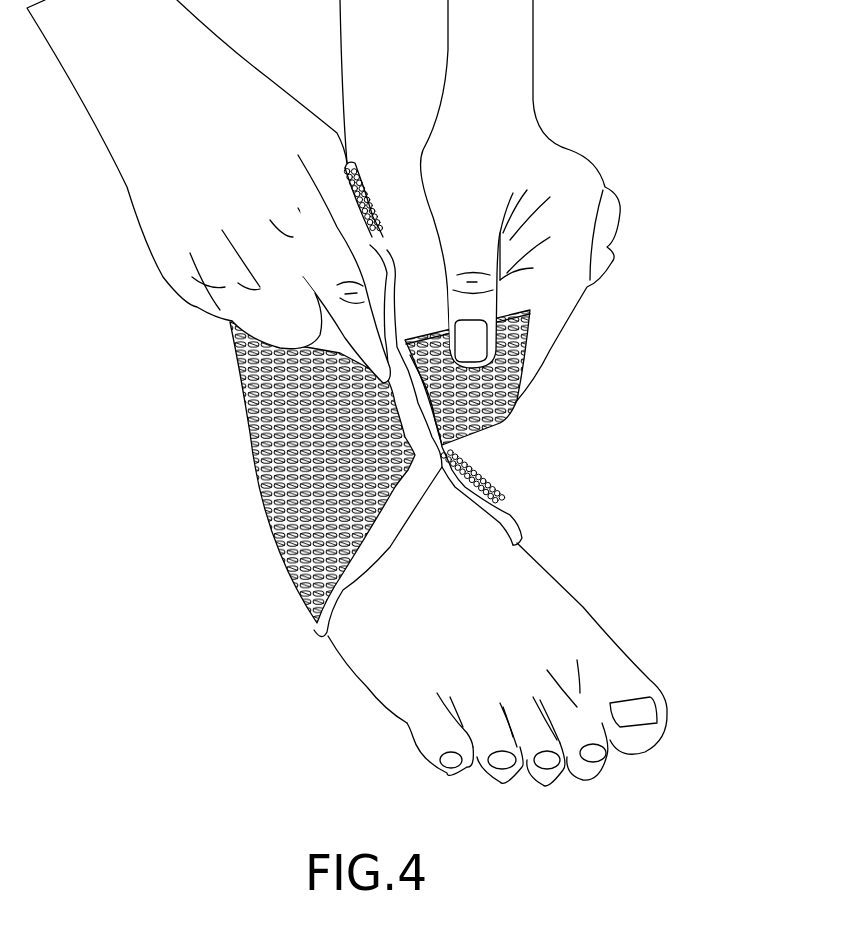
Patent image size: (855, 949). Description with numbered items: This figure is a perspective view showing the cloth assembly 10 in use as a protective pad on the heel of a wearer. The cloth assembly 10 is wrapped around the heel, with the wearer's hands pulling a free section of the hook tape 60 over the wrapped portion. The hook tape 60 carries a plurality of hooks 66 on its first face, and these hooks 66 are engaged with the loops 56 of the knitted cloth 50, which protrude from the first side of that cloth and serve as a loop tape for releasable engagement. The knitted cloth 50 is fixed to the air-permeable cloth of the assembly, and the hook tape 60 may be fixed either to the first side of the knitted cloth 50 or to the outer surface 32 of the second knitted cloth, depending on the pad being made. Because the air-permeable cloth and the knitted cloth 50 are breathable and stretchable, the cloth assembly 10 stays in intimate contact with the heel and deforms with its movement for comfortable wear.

The cloth assembly 10 is at (365, 399).
The outer surface 32 is at (481, 353).
The knitted cloth 50 is at (299, 472).
The loops 56 is at (295, 470).
The hook tape 60 is at (510, 412).
The hooks 66 is at (473, 420).